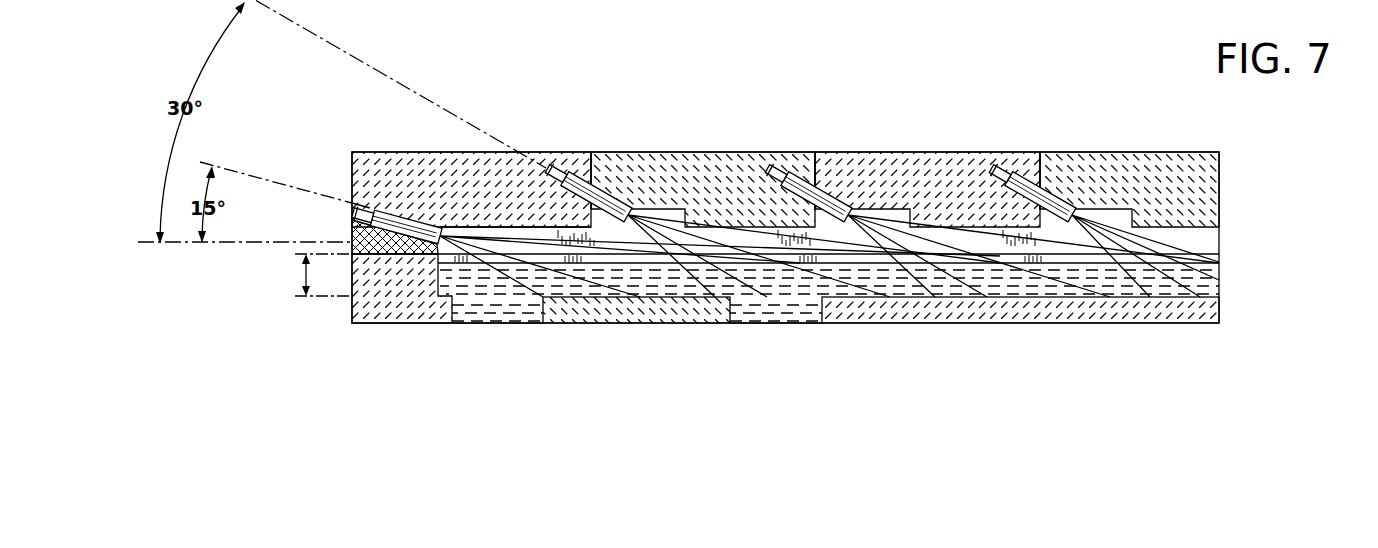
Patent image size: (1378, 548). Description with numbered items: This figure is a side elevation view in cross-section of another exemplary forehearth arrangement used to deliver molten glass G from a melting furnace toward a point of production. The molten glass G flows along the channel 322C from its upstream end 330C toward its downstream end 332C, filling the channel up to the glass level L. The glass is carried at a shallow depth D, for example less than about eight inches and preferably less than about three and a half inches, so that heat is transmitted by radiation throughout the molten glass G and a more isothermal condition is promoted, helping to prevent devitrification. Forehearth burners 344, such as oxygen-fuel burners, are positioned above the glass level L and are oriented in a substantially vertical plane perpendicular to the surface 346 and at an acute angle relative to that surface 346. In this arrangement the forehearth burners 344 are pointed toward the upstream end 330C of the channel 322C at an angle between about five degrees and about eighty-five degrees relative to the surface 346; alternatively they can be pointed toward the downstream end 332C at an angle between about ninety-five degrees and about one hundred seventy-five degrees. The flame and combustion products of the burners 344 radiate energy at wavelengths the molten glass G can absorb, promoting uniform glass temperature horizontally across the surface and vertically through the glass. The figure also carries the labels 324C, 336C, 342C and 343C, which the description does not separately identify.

The channel 322C is at (462, 82).
The upper block 324C is at (1150, 152).
The upstream end 330C is at (1270, 267).
The downstream end 332C is at (278, 299).
The slot region 336C is at (352, 247).
The nozzle bore 342C is at (573, 163).
The angled nozzle bore 343C is at (350, 204).
The forehearth burners 344 is at (410, 224).
The surface 346 is at (1195, 226).
The glass level L is at (1200, 256).
The molten glass G is at (1200, 282).
The depth D is at (303, 275).